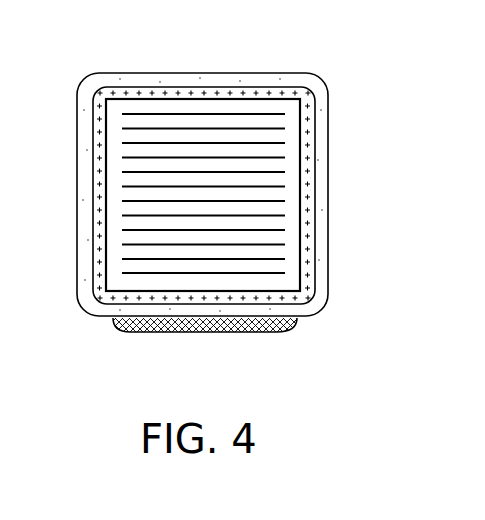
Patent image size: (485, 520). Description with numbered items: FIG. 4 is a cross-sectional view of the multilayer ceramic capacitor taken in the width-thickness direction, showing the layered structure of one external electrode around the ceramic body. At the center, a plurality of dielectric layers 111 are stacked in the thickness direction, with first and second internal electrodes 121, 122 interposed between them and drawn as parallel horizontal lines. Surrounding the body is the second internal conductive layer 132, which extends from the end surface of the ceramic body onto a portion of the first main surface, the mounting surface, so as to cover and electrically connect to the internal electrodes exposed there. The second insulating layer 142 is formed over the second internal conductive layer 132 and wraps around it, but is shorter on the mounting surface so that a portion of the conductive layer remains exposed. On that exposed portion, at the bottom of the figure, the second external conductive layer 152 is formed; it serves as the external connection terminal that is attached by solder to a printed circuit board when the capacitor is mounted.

The dielectric layer 111 is at (295, 190).
The first internal electrode 121 is at (142, 113).
The second internal electrode 122 is at (192, 128).
The second internal conductive layer 132 is at (307, 257).
The second insulating layer 142 is at (322, 305).
The second external conductive layer 152 is at (255, 333).